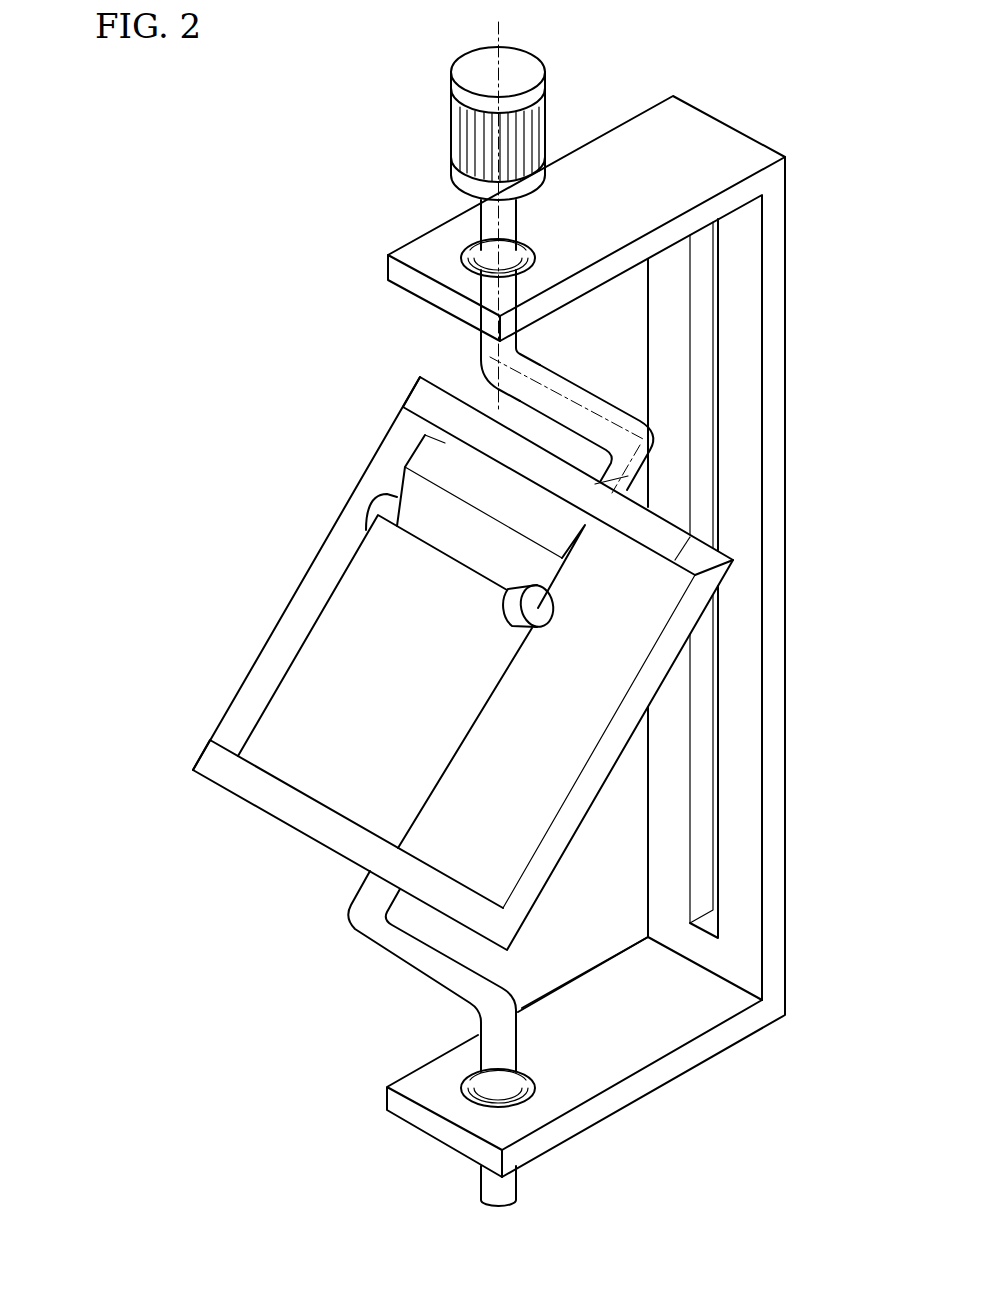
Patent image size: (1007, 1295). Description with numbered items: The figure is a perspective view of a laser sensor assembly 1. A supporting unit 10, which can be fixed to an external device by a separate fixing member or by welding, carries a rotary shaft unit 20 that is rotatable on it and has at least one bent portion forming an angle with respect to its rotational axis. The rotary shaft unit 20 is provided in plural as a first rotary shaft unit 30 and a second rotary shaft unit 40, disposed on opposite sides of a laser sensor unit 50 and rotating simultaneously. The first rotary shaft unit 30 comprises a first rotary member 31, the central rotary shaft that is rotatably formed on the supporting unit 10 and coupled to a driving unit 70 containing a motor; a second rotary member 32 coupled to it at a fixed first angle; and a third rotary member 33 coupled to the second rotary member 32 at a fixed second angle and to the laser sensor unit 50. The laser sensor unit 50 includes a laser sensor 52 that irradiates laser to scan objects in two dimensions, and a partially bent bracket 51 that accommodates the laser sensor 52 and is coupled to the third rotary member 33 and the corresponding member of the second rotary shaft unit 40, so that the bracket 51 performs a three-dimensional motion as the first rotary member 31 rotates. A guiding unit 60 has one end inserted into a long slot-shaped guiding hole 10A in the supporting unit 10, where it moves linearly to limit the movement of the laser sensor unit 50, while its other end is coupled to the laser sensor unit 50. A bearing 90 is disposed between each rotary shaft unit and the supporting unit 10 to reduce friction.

The laser sensor assembly 1 is at (252, 125).
The supporting unit 10 is at (692, 150).
The guiding hole 10A is at (708, 325).
The rotary shaft unit 20 is at (87, 517).
The first rotary shaft unit 30 is at (140, 416).
The first rotary member 31 is at (480, 343).
The second rotary member 32 is at (575, 404).
The third rotary member 33 is at (605, 462).
The second rotary shaft unit 40 is at (497, 1048).
The laser sensor unit 50 is at (840, 905).
The bracket 51 is at (537, 870).
The laser sensor 52 is at (410, 758).
The guiding unit 60 is at (672, 780).
The driving unit 70 is at (462, 158).
The bearing 90 is at (462, 256).